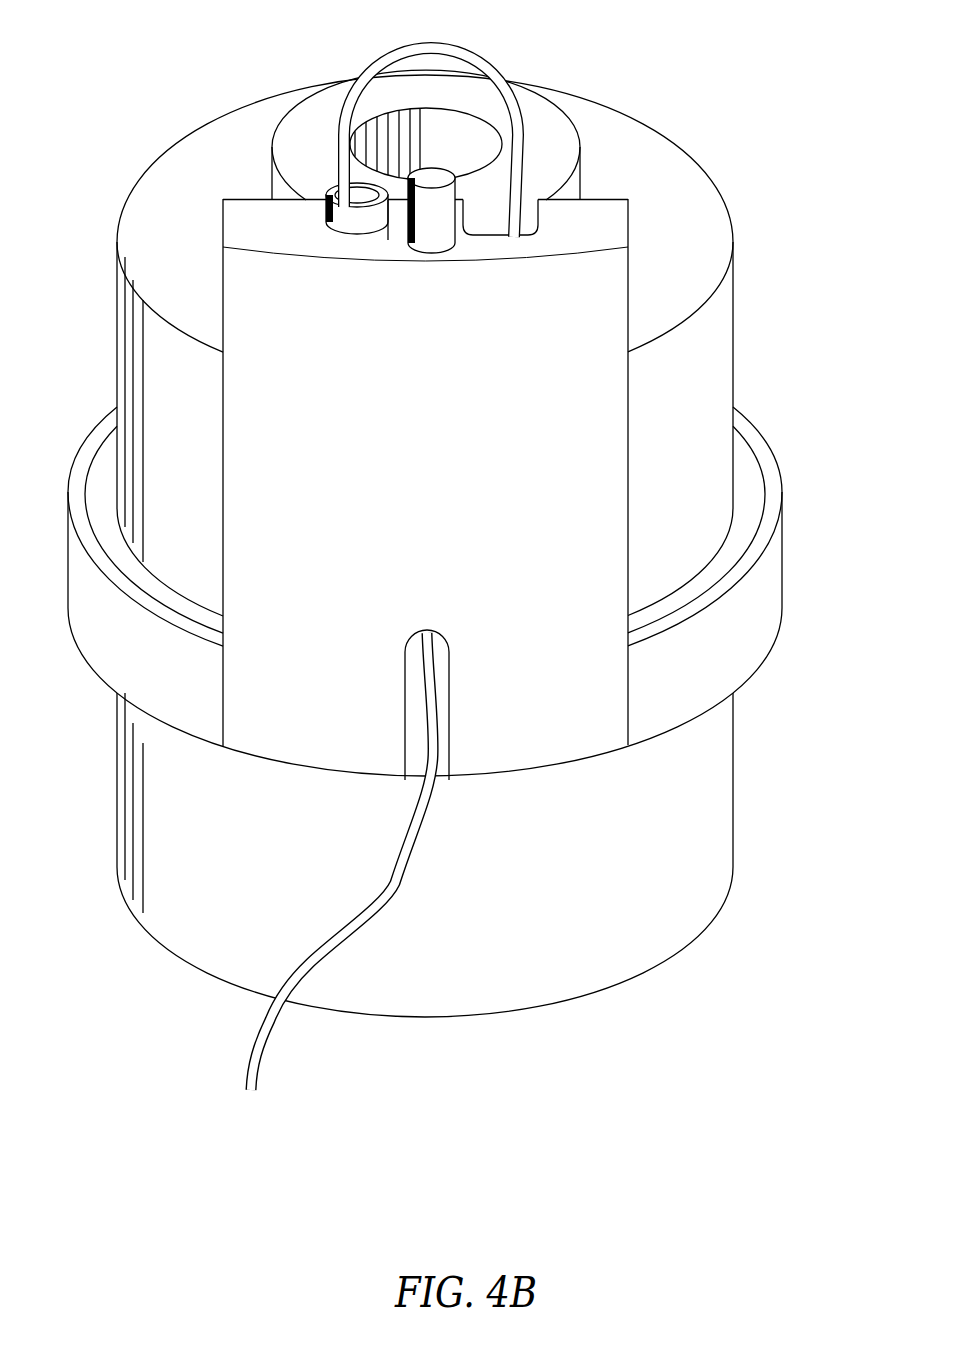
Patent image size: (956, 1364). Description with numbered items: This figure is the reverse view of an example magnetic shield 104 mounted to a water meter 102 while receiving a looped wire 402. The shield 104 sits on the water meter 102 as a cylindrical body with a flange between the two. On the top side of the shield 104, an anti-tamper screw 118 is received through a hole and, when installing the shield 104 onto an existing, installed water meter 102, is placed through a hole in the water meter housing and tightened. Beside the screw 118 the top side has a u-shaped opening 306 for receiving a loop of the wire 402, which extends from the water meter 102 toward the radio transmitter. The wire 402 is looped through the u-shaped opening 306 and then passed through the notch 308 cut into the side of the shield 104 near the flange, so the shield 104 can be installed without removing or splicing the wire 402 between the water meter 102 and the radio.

The water meter 102 is at (618, 978).
The magnetic shield 104 is at (570, 373).
The anti-tamper screw 118 is at (447, 199).
The u-shaped opening 306 is at (490, 222).
The notch 308 is at (438, 657).
The looped wire 402 is at (415, 42).